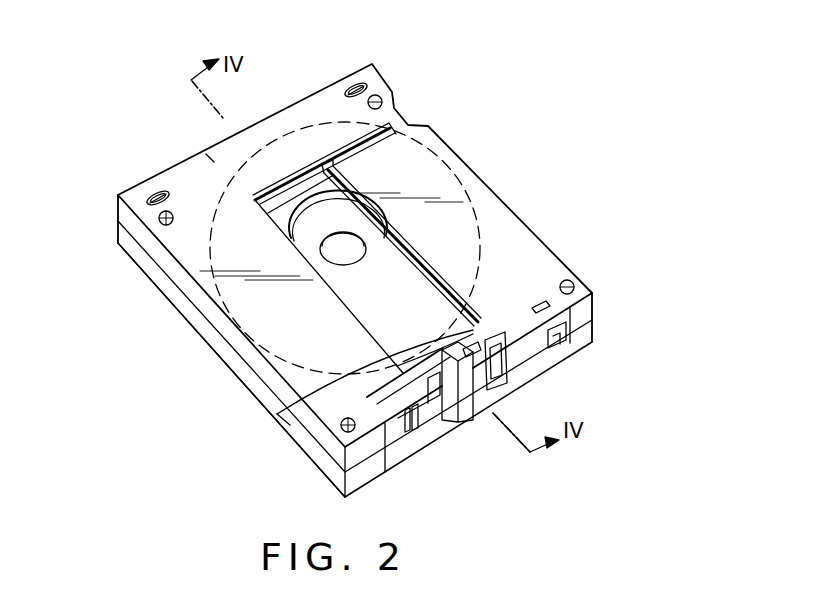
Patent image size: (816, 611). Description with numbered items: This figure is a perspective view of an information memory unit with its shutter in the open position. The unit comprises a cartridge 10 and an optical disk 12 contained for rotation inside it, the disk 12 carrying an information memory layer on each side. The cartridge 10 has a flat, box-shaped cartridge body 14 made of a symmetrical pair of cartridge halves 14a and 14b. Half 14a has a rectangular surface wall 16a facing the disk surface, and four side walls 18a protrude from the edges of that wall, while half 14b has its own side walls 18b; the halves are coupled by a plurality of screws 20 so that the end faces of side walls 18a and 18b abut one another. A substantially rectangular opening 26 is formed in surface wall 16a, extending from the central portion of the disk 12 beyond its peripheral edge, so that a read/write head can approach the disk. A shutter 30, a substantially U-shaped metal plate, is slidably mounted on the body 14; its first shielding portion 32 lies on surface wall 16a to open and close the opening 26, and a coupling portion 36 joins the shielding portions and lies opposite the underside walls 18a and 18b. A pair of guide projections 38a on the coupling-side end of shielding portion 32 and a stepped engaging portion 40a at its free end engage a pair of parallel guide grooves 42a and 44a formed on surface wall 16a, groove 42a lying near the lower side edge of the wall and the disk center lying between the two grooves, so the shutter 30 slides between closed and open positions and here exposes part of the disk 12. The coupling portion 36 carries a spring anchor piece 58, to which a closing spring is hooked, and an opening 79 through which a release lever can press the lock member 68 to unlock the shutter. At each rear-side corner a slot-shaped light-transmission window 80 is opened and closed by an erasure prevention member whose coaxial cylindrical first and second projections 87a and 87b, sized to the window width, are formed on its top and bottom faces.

The cartridge 10 is at (476, 166).
The optical disk 12 is at (218, 306).
The cartridge body 14 is at (158, 295).
The cartridge half 14a is at (586, 306).
The cartridge half 14b is at (586, 330).
The surface wall 16a is at (212, 160).
The side walls 18a is at (121, 212).
The side walls 18b is at (121, 247).
The screws 20 is at (395, 92).
The opening 26 is at (343, 283).
The shutter 30 is at (432, 166).
The first shielding portion 32 is at (418, 248).
The coupling portion 36 is at (530, 365).
The guide projections 38a is at (473, 358).
The engaging portion 40a is at (293, 228).
The guide groove 42a is at (278, 414).
The guide groove 44a is at (278, 236).
The spring anchor piece 58 is at (560, 344).
The lock member 68 is at (425, 420).
The opening 79 is at (519, 432).
The light-transmission window 80 is at (147, 196).
The first projection 87a is at (164, 194).
The second projection 87b is at (352, 92).